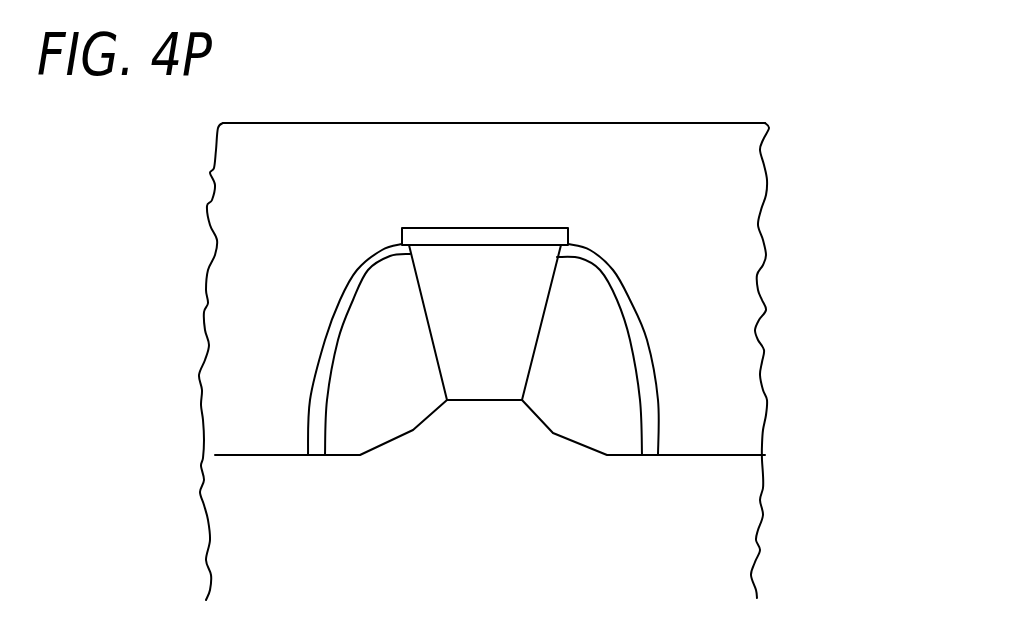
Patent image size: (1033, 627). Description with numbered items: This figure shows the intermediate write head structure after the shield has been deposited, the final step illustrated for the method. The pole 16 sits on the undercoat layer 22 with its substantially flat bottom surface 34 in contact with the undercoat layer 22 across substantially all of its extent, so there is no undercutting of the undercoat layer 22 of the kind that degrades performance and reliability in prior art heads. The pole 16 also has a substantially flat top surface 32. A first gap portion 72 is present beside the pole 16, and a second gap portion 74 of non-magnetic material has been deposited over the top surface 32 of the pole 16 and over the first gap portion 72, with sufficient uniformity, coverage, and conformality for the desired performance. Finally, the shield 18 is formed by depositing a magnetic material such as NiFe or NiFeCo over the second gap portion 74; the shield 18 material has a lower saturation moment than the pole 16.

The shield 18 is at (722, 138).
The undercoat layer 22 is at (698, 490).
The first gap portion 72 is at (385, 307).
The second gap portion 74 is at (528, 244).
The pole 16 is at (515, 288).
The top surface 32 is at (467, 248).
The bottom surface 34 is at (487, 400).